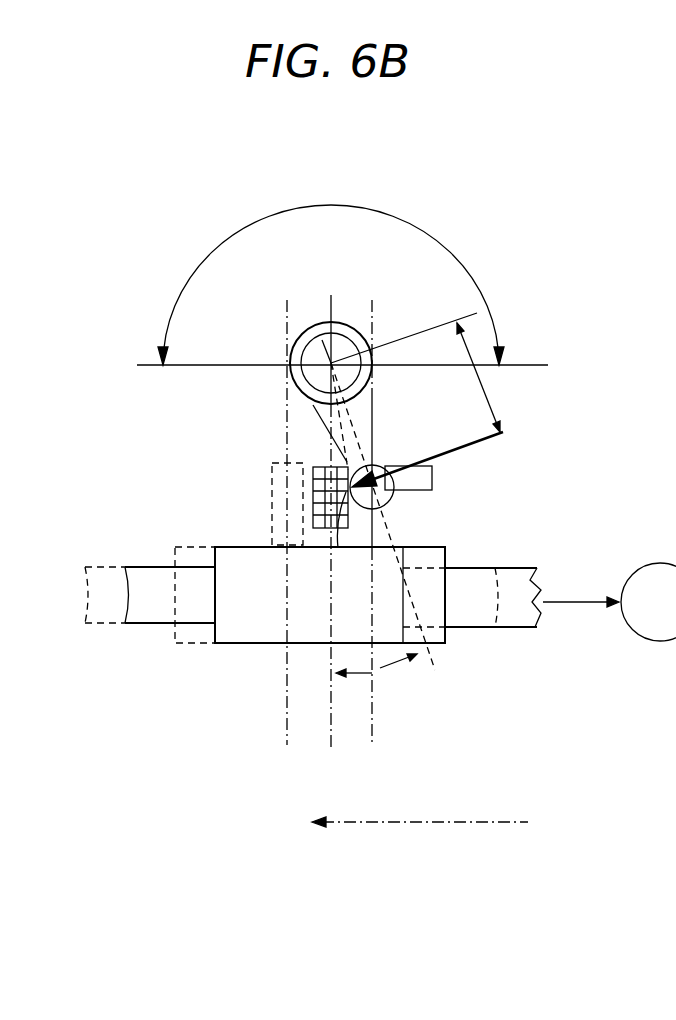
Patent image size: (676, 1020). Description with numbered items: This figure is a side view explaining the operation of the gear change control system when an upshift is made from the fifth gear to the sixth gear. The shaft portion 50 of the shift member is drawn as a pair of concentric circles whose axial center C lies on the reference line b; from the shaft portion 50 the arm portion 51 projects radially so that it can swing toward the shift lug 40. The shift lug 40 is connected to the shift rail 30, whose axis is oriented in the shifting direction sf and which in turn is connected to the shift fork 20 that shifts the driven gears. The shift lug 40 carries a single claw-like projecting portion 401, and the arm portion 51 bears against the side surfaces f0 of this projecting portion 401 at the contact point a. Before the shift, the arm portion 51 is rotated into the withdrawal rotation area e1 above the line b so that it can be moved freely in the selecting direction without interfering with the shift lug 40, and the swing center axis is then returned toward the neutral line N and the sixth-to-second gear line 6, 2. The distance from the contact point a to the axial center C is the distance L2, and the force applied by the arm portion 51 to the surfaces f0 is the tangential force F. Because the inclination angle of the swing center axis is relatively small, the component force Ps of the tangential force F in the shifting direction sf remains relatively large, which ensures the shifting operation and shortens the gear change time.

The shaft portion 50 is at (362, 335).
The arm portion 51 is at (394, 465).
The projecting portion 401 is at (350, 466).
The shift lug 40 is at (435, 598).
The shift rail 30 is at (523, 583).
The shift fork 20 is at (609, 602).
The line b is at (530, 365).
The withdrawal rotation area e1 is at (219, 254).
The axial center C is at (303, 340).
The distance L2 is at (487, 410).
The tangential force F is at (437, 478).
The component force Ps is at (410, 492).
The side surfaces f0 is at (356, 518).
The contact point a is at (340, 548).
The neutral axis N is at (328, 539).
The axis 6 is at (286, 541).
The first clutch 2 is at (372, 541).
The shifting direction sf is at (388, 822).